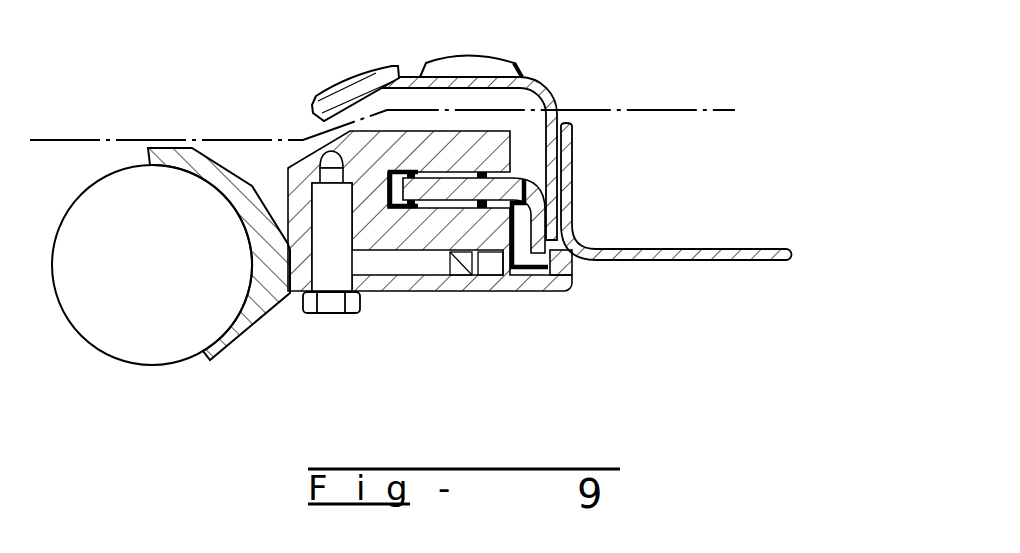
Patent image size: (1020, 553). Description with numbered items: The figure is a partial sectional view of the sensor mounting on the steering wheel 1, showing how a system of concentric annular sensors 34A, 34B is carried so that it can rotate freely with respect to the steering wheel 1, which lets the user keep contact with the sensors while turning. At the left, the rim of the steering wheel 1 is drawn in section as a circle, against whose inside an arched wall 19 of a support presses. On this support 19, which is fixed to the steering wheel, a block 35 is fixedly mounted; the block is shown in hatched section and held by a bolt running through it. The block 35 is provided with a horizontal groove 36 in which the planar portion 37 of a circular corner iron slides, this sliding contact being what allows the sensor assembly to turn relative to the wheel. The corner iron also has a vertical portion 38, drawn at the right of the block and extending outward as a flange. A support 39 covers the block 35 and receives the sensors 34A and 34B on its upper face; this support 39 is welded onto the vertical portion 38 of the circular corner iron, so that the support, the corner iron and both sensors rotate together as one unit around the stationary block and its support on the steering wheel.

The steering wheel 1 is at (159, 311).
The arched wall 19 is at (258, 320).
The annular sensor 34A is at (358, 78).
The annular sensor 34B is at (480, 56).
The block 35 is at (441, 235).
The horizontal groove 36 is at (481, 215).
The planar portion 37 is at (418, 212).
The vertical portion 38 is at (570, 277).
The support 39 is at (548, 103).